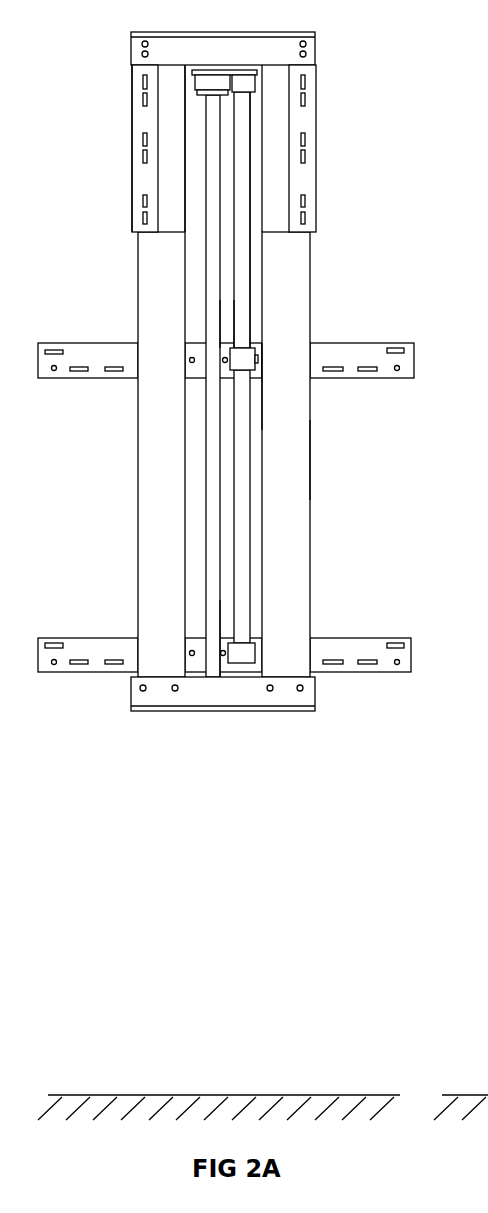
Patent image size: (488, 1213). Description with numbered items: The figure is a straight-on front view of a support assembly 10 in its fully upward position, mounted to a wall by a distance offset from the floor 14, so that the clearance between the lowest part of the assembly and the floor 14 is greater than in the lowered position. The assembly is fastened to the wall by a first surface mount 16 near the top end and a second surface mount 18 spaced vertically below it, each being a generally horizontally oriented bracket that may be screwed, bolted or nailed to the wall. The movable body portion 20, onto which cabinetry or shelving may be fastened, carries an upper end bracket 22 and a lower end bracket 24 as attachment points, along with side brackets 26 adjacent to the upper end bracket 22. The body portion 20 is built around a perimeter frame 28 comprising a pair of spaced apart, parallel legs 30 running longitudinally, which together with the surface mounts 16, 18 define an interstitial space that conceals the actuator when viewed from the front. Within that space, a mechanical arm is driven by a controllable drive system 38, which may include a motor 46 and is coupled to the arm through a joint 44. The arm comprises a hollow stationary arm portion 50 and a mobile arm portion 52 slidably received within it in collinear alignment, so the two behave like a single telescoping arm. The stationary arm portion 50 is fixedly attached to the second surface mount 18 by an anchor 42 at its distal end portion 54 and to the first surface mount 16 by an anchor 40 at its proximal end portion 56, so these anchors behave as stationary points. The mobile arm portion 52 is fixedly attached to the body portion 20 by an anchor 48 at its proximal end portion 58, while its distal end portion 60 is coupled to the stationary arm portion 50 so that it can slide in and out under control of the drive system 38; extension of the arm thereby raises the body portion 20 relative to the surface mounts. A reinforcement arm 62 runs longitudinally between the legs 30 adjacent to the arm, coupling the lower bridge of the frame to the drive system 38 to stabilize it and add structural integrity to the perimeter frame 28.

The support assembly 10 is at (131, 844).
The floor 14 is at (157, 1091).
The first surface mount 16 is at (63, 378).
The second surface mount 18 is at (378, 638).
The body portion 20 is at (127, 254).
The upper end bracket 22 is at (272, 52).
The lower end bracket 24 is at (218, 693).
The side brackets 26 is at (143, 183).
The perimeter frame 28 is at (319, 458).
The legs 30 is at (138, 488).
The drive system 38 is at (191, 99).
The anchor 40 is at (243, 358).
The anchor 42 is at (242, 655).
The joint 44 is at (228, 82).
The motor 46 is at (207, 75).
The anchor 48 is at (243, 83).
The stationary arm portion 50 is at (240, 548).
The mobile arm portion 52 is at (240, 242).
The distal end portion 54 is at (222, 629).
The proximal end portion 56 is at (260, 388).
The proximal end portion 58 is at (254, 111).
The distal end portion 60 is at (226, 324).
The reinforcement arm 62 is at (212, 425).